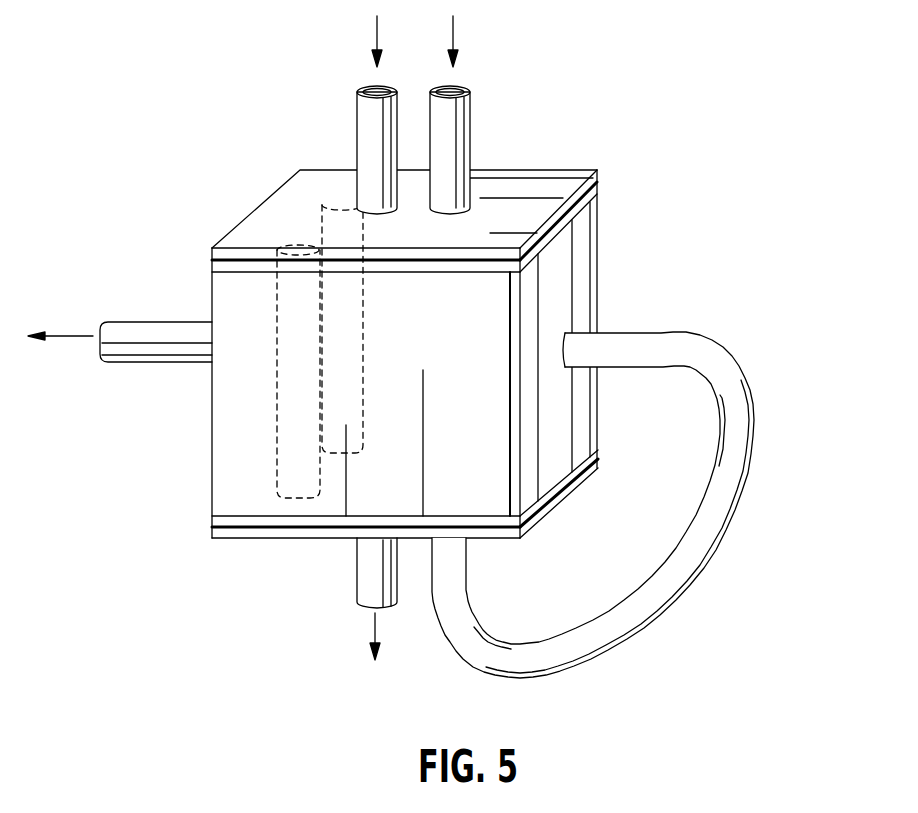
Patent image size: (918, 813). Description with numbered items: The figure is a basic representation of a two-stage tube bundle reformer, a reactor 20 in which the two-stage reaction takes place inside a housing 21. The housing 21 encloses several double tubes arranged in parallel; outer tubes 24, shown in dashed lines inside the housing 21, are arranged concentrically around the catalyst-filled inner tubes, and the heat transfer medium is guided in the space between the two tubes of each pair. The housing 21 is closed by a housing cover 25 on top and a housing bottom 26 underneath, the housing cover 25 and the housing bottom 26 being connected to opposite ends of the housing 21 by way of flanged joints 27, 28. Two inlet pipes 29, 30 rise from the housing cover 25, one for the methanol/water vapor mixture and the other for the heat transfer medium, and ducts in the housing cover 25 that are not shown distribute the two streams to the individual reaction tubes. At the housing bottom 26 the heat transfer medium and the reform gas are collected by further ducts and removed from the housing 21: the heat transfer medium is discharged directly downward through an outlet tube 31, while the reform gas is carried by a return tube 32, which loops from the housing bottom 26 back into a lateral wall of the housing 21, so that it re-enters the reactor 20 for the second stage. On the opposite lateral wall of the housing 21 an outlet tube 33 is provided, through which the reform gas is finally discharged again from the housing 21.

The reactor 20 is at (650, 215).
The housing 21 is at (578, 257).
The outer tubes 24 is at (275, 412).
The housing cover 25 is at (540, 190).
The housing bottom 26 is at (253, 540).
The flanged joint 27 is at (600, 193).
The flanged joint 28 is at (570, 495).
The inlet pipe 29 is at (468, 133).
The inlet pipe 30 is at (367, 132).
The outlet tube 31 is at (368, 566).
The return tube 32 is at (708, 493).
The outlet tube 33 is at (158, 335).